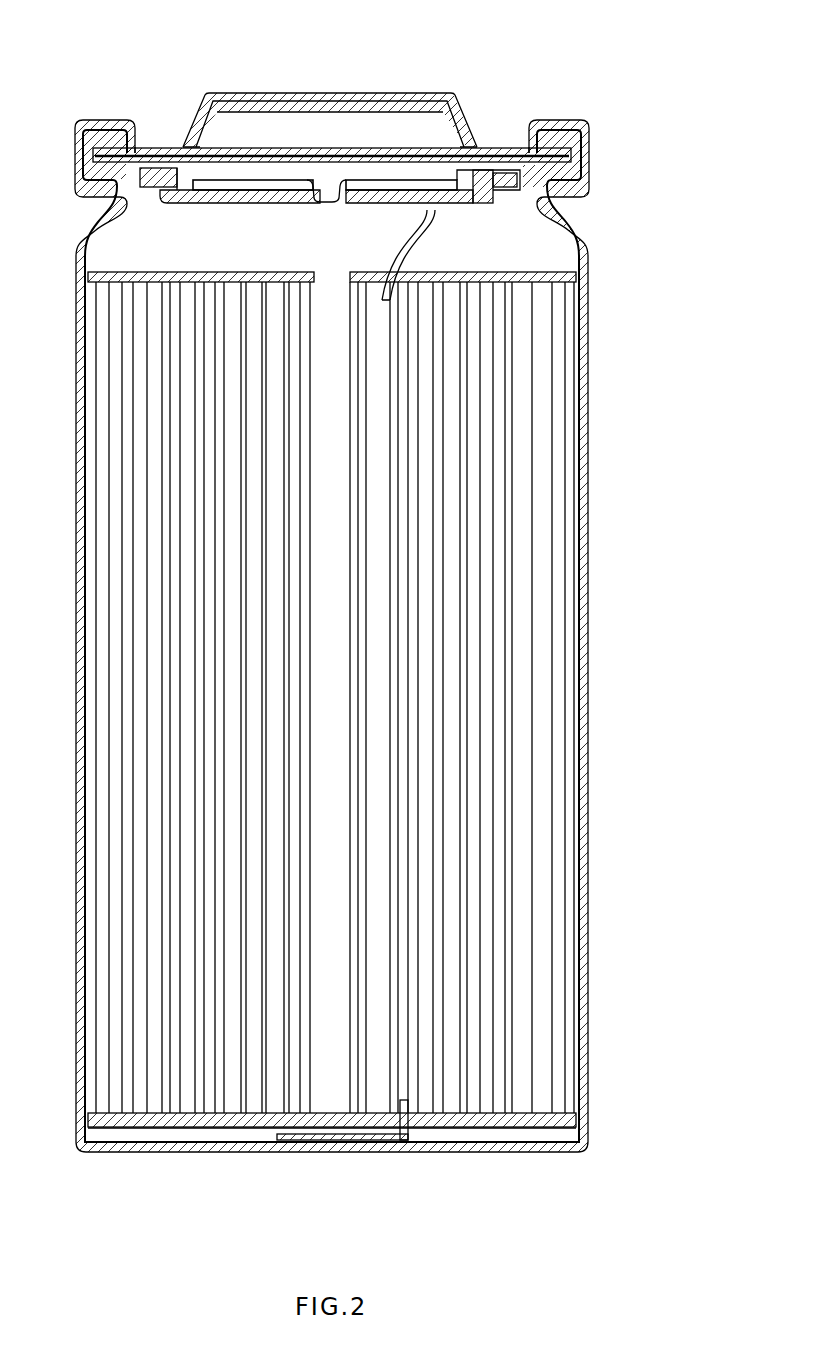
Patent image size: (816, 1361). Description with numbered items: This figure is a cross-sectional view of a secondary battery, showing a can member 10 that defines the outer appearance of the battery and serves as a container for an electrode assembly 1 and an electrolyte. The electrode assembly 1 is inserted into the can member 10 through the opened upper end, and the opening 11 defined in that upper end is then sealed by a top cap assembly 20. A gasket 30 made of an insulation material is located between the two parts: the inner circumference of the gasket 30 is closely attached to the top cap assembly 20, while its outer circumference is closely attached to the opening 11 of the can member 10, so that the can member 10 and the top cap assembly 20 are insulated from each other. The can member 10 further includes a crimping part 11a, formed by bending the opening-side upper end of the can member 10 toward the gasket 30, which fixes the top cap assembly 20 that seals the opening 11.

The electrode assembly 1 is at (568, 447).
The can member 10 is at (588, 518).
The opening 11 is at (404, 103).
The crimping part 11a is at (547, 123).
The top cap assembly 20 is at (343, 90).
The gasket 30 is at (558, 173).